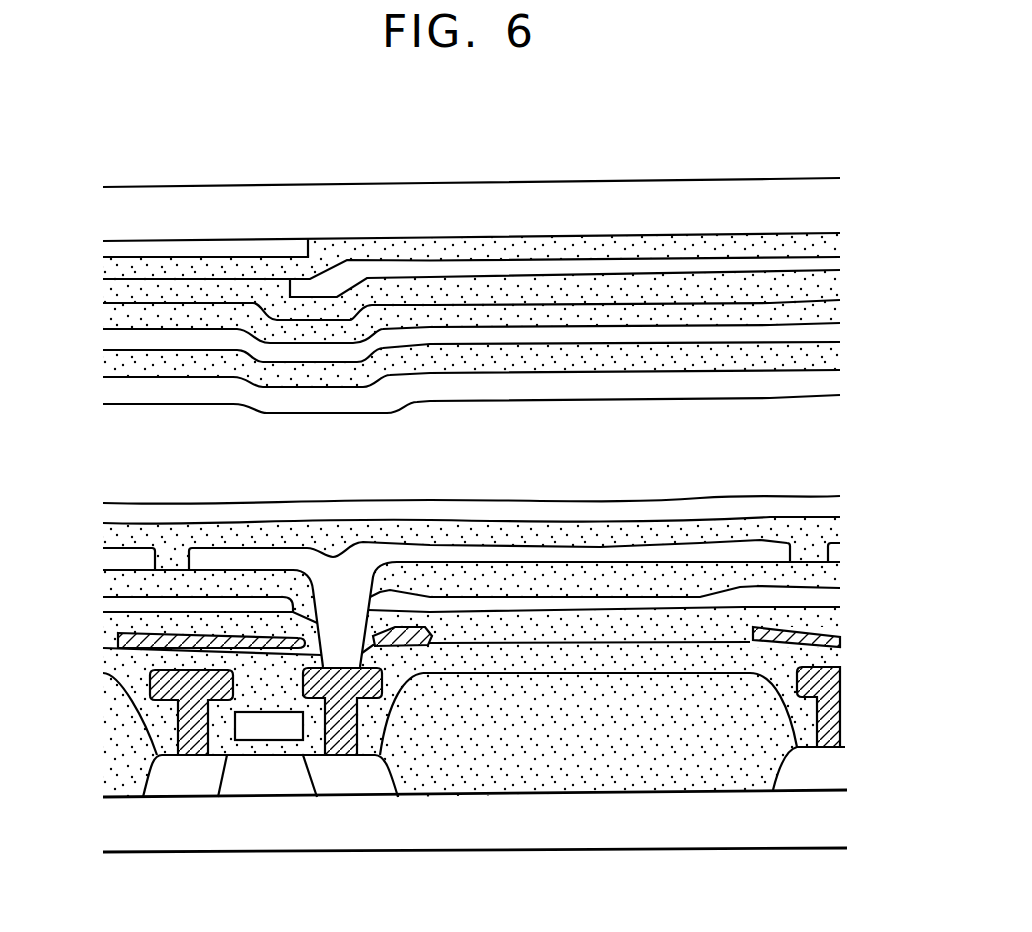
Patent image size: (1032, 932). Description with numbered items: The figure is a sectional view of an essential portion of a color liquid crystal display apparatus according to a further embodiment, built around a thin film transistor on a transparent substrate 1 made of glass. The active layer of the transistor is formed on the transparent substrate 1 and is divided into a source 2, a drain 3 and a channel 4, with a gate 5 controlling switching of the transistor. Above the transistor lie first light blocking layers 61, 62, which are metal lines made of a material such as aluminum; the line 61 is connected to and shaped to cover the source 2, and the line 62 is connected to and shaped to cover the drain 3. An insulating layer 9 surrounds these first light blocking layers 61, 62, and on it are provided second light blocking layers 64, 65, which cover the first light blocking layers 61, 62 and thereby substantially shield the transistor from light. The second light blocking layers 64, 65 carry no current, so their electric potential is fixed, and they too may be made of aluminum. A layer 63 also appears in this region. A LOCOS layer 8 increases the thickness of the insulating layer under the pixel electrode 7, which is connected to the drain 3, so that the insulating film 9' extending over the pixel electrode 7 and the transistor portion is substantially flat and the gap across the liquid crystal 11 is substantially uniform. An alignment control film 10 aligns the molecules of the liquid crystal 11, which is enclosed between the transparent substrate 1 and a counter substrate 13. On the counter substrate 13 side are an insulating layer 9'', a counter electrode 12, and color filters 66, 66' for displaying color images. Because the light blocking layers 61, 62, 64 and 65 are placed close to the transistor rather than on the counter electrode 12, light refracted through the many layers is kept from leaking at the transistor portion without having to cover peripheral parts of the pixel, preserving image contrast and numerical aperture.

The transparent substrate 1 is at (802, 820).
The source 2 is at (160, 787).
The drain 3 is at (380, 785).
The channel 4 is at (248, 788).
The gate 5 is at (278, 732).
The first light blocking layer 61 is at (197, 745).
The first light blocking layer 62 is at (343, 747).
The gap layer 63 is at (118, 602).
The second light blocking layer 64 is at (118, 638).
The second light blocking layer 65 is at (410, 633).
The color filter 66 is at (206, 210).
The color filter 66' is at (471, 207).
The pixel electrode 7 is at (763, 543).
The LOCOS layer 8 is at (687, 780).
The insulating layer 9 is at (501, 713).
The insulating film 9' is at (505, 597).
The insulating layer 9'' is at (508, 310).
The alignment control film 10 is at (827, 383).
The liquid crystal 11 is at (825, 437).
The counter electrode 12 is at (106, 335).
The counter substrate 13 is at (828, 199).